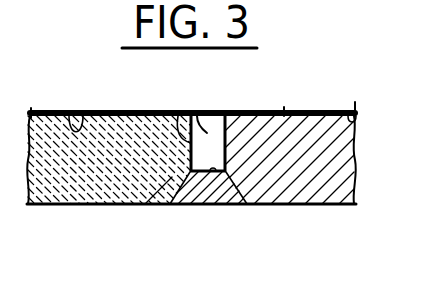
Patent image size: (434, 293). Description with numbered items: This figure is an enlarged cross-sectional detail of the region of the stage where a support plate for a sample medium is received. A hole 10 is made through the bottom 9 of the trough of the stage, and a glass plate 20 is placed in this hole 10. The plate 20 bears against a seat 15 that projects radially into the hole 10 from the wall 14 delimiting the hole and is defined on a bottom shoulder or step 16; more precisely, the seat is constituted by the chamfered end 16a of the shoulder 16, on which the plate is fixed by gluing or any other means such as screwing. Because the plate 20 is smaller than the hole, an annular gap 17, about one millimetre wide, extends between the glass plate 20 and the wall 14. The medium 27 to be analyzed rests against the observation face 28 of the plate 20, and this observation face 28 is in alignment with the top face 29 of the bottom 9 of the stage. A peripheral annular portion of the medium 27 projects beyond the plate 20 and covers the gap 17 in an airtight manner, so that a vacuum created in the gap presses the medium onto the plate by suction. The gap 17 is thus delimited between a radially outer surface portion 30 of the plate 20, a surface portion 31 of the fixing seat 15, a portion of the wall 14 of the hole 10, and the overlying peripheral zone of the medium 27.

The bottom 9 is at (318, 190).
The hole 10 is at (85, 206).
The wall 14 is at (226, 112).
The seat 15 is at (175, 179).
The bottom shoulder 16 is at (216, 188).
The chamfered end 16a is at (182, 183).
The annular gap 17 is at (205, 113).
The glass plate 20 is at (62, 186).
The medium 27 is at (285, 108).
The observation face 28 is at (69, 116).
The top face 29 is at (355, 118).
The radially outer surface portion 30 is at (180, 112).
The surface portion 31 is at (229, 186).